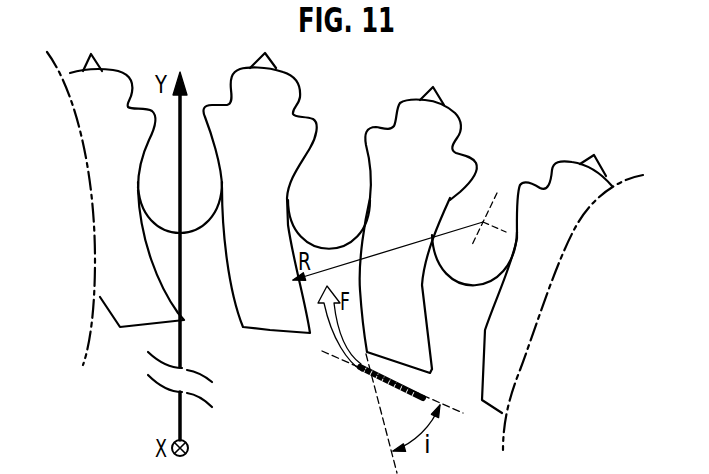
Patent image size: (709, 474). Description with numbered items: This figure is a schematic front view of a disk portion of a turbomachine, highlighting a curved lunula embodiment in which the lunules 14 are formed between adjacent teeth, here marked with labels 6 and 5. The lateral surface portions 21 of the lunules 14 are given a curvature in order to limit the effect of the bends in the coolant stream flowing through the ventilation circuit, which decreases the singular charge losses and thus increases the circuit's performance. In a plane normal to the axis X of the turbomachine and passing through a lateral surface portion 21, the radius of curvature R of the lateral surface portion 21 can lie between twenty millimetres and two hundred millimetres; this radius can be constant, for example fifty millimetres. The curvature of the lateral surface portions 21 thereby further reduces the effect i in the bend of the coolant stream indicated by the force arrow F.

The slot 5 is at (334, 220).
The tooth 6 is at (269, 108).
The lunule 14 is at (470, 315).
The lateral surface portion 21 is at (481, 330).